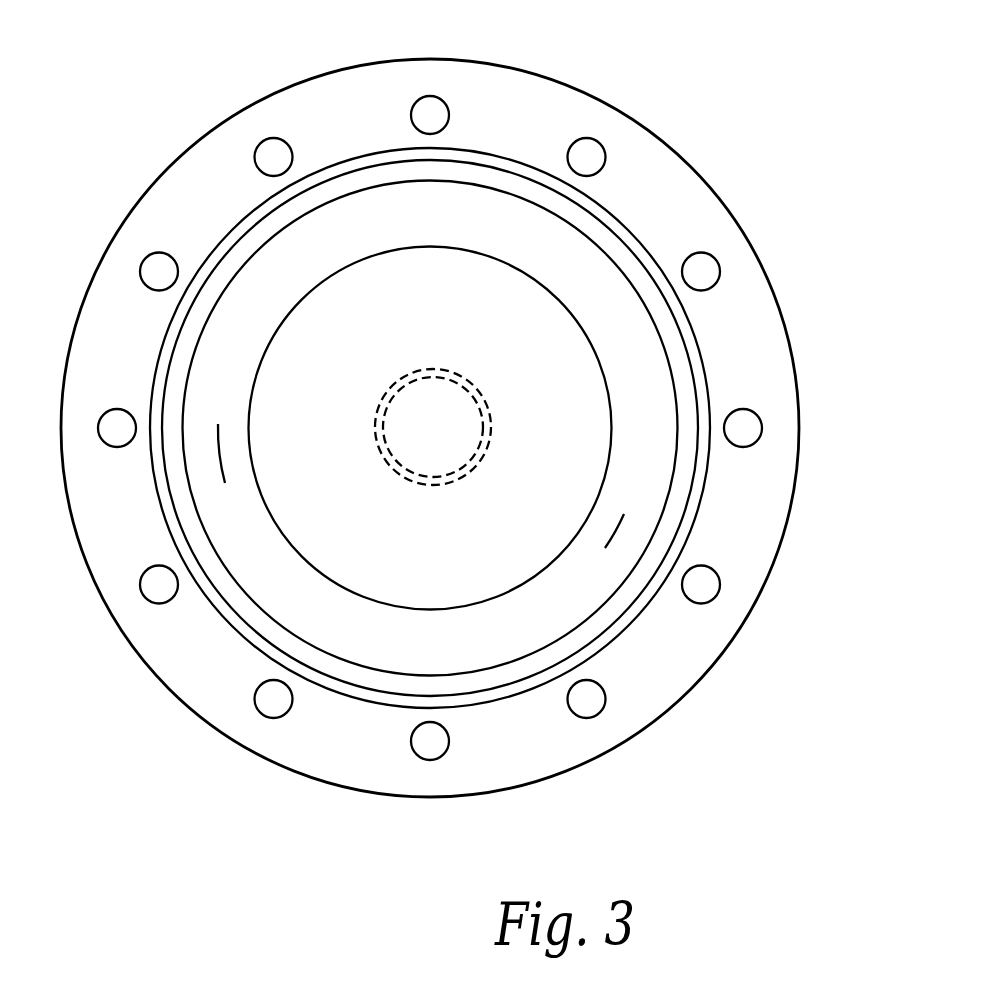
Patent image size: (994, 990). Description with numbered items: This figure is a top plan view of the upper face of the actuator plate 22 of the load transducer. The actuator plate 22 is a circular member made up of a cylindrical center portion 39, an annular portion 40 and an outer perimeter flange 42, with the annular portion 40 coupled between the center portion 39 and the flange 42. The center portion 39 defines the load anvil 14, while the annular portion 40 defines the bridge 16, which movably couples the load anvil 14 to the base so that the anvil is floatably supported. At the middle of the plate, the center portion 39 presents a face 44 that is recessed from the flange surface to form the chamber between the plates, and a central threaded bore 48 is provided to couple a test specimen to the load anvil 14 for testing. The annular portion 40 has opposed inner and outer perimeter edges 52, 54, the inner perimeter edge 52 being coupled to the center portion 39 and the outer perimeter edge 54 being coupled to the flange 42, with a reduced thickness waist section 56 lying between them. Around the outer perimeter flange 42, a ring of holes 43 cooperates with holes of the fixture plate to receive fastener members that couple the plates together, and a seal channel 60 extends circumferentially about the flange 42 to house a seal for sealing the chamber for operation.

The load anvil 14 is at (460, 560).
The bridge 16 is at (618, 527).
The actuator plate 22 is at (716, 152).
The center portion 39 is at (433, 311).
The annular portion 40 is at (296, 596).
The outer perimeter flange 42 is at (560, 721).
The holes 43 is at (420, 110).
The face 44 is at (534, 448).
The central threaded bore 48 is at (458, 404).
The inner perimeter edge 52 is at (260, 472).
The outer perimeter edge 54 is at (230, 556).
The waist section 56 is at (219, 435).
The seal channel 60 is at (712, 467).